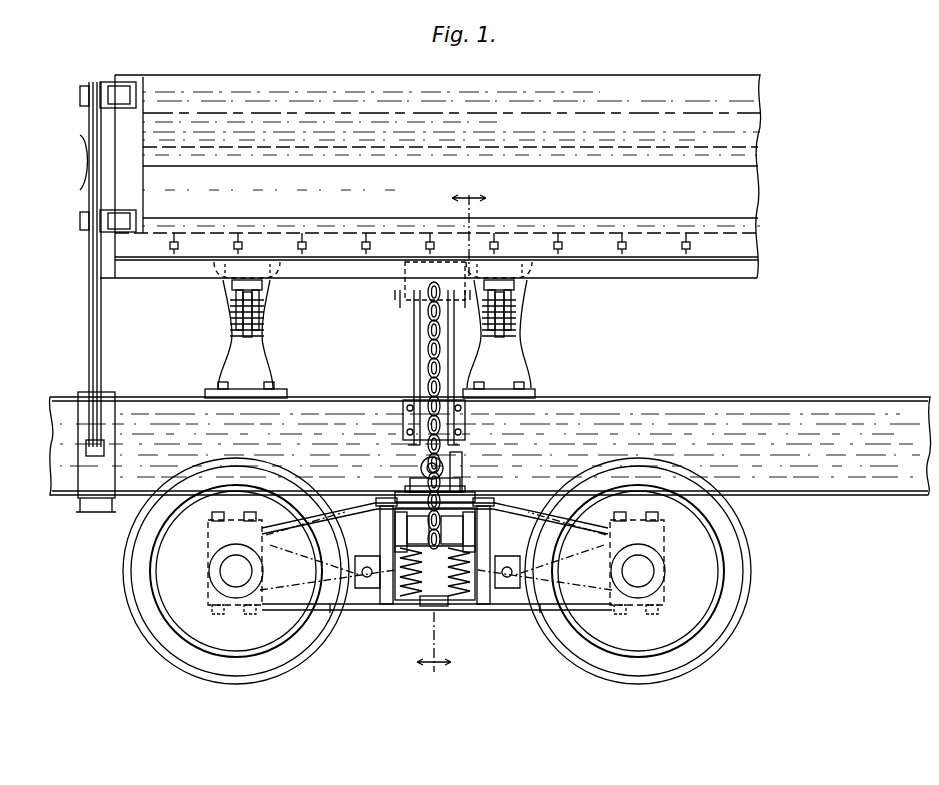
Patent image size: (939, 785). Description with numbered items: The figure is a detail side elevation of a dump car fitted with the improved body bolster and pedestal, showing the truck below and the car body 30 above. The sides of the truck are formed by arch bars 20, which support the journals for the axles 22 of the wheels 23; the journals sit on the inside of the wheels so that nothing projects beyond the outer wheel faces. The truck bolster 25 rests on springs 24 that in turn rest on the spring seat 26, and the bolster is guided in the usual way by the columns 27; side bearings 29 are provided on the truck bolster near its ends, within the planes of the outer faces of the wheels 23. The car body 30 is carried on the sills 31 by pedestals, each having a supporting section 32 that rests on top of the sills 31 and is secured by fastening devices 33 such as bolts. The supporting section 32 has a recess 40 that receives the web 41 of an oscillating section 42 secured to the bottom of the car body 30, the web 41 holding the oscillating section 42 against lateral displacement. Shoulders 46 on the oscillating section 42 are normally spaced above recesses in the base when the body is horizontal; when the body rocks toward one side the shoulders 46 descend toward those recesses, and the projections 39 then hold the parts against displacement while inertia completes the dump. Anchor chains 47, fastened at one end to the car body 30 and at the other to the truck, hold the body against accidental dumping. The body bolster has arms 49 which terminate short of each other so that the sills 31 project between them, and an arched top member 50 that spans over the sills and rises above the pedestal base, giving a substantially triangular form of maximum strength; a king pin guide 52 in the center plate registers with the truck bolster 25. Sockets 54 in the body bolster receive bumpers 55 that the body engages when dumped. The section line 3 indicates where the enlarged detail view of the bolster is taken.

The section line 3— 3 is at (451, 434).
The arch bars 20 is at (488, 530).
The axles 22 is at (236, 580).
The wheels 23 is at (252, 658).
The springs 24 is at (418, 582).
The truck bolster 25 is at (395, 520).
The spring seat 26 is at (462, 580).
The columns 27 is at (492, 520).
The truck side bearings 29 is at (400, 490).
The car body 30 is at (724, 262).
The sills 31 is at (345, 410).
The supporting section 32 is at (258, 372).
The fastening devices 33 is at (236, 372).
The projections 39 is at (243, 300).
The recess 40 is at (262, 320).
The web 41 is at (259, 300).
The oscillating section 42 is at (245, 272).
The shoulders 46 is at (234, 285).
The anchor chains 47 is at (414, 304).
The arms 49 is at (462, 478).
The top member 50 is at (428, 350).
The king pin guide 52 is at (465, 430).
The sockets 54 is at (462, 486).
The bumpers 55 is at (422, 466).